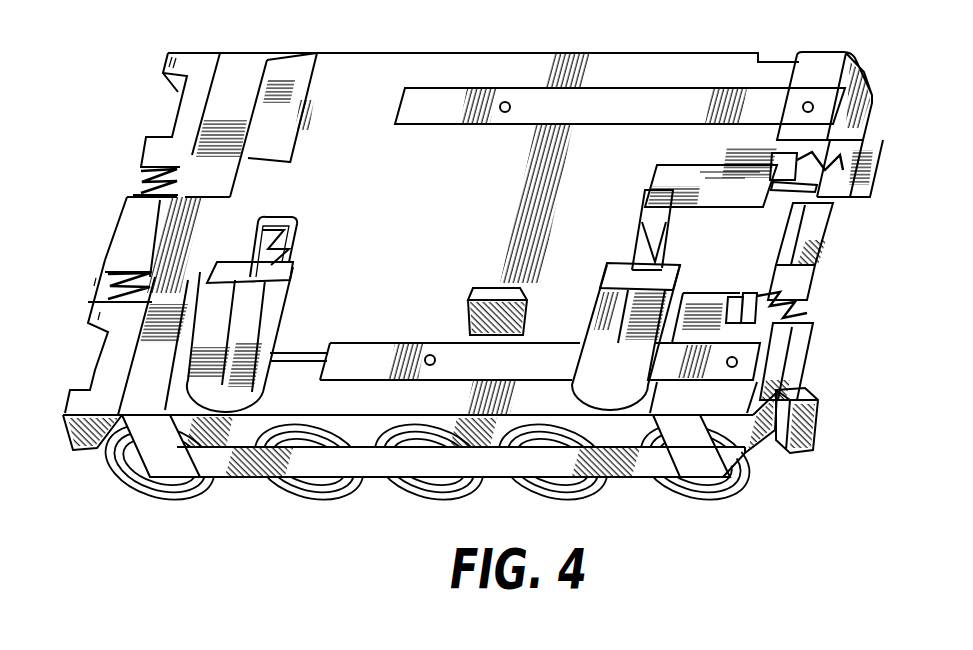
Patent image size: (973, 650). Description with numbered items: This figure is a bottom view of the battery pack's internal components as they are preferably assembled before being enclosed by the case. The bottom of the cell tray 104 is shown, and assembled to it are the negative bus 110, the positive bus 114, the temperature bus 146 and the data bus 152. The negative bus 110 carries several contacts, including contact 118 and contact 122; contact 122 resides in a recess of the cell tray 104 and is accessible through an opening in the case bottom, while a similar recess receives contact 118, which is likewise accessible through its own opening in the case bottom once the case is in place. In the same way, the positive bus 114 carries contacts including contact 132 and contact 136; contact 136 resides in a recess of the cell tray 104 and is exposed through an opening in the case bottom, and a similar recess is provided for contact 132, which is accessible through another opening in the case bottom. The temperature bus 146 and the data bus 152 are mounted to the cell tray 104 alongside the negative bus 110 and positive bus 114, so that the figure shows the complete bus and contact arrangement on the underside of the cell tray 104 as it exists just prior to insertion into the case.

The cell tray 104 is at (366, 77).
The negative bus 110 is at (240, 77).
The positive bus 114 is at (147, 375).
The contact 118 is at (148, 178).
The contact 122 is at (838, 172).
The contact 132 is at (110, 283).
The contact 136 is at (787, 316).
The temperature bus 146 is at (810, 414).
The data bus 152 is at (890, 165).